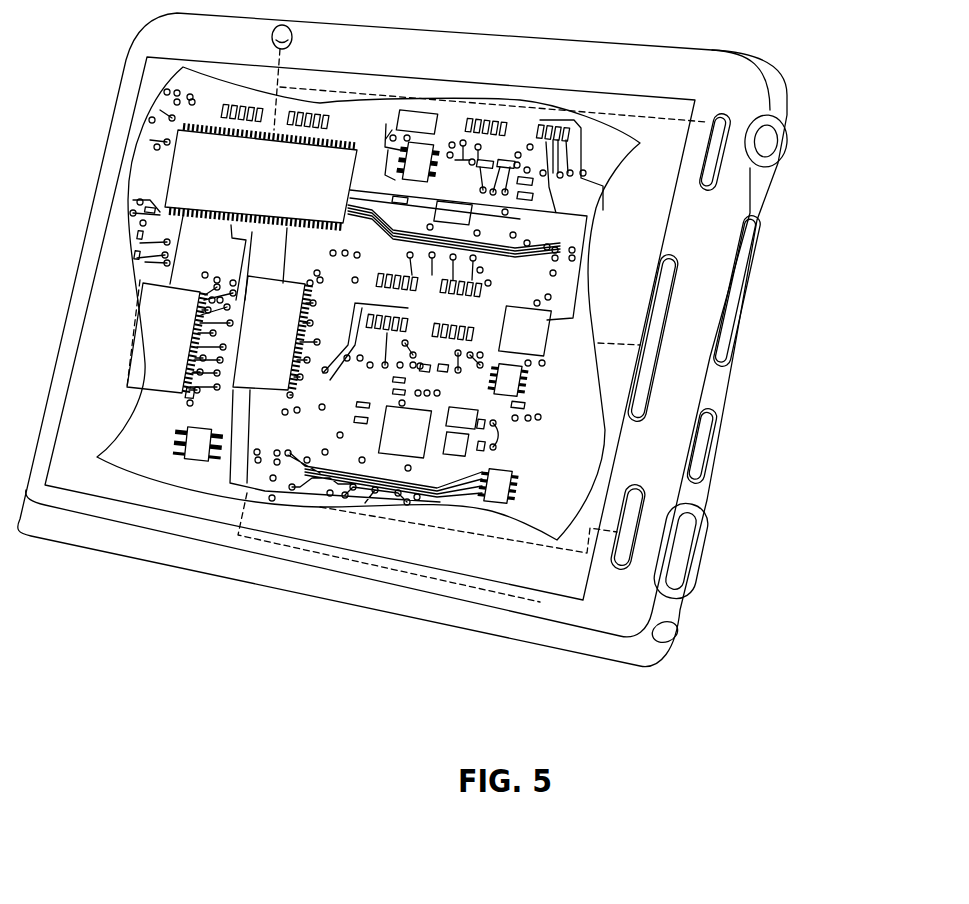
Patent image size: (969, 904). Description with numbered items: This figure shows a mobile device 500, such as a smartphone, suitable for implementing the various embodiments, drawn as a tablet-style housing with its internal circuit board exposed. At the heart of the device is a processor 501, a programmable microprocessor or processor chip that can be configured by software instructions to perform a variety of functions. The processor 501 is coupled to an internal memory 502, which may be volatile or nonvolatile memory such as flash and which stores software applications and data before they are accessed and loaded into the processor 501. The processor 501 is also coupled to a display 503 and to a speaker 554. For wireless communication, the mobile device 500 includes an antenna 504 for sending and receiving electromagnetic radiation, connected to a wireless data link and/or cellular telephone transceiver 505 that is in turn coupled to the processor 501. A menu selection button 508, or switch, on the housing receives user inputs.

The mobile device 500 is at (717, 50).
The processor 501 is at (239, 184).
The internal memory 502 is at (149, 315).
The display 503 is at (542, 86).
The antenna 504 is at (677, 647).
The wireless data link and/or cellular telephone transceiver 505 is at (251, 333).
The menu selection button 508 is at (718, 160).
The speaker 554 is at (663, 253).